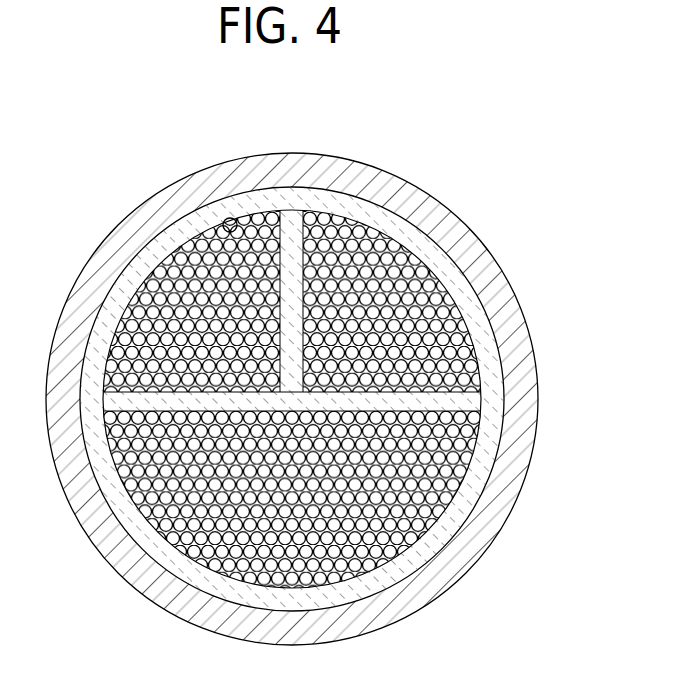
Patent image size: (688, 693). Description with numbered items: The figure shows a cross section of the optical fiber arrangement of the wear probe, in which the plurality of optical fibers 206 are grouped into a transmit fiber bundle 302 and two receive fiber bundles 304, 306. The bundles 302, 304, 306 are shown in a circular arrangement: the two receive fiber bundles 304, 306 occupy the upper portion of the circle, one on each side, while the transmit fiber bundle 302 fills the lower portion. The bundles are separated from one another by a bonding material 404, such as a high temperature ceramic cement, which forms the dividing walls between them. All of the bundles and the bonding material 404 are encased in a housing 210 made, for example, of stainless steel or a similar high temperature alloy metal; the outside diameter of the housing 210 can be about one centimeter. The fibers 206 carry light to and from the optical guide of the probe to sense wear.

The optical fibers 206 is at (108, 170).
The receive fiber bundle 306 is at (230, 222).
The receive fiber bundle 304 is at (420, 270).
The bonding material 404 is at (463, 402).
The housing 210 is at (517, 466).
The transmit fiber bundle 302 is at (377, 563).